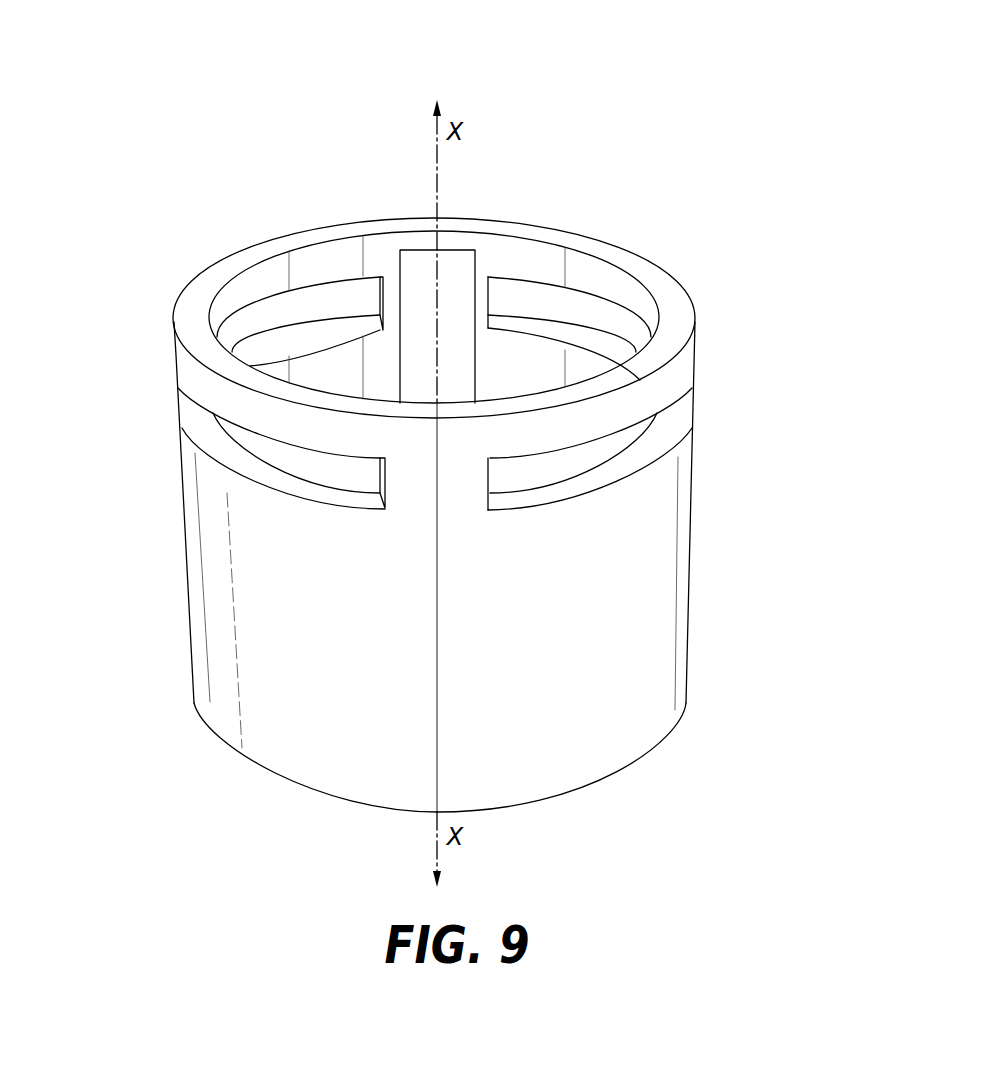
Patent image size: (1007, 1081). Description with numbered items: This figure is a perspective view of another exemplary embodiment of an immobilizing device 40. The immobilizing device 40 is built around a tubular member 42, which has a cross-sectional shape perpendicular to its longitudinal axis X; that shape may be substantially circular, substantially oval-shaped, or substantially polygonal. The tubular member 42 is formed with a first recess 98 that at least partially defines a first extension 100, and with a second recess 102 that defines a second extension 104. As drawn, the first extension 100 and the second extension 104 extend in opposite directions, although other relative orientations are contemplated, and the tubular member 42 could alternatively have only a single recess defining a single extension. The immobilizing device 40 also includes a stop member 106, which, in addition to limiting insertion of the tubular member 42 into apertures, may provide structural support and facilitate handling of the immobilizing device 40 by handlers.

The immobilizing device 40 is at (643, 153).
The tubular member 42 is at (637, 729).
The first recess 98 is at (603, 450).
The first extension 100 is at (680, 362).
The second recess 102 is at (292, 452).
The second extension 104 is at (197, 369).
The stop member 106 is at (466, 256).